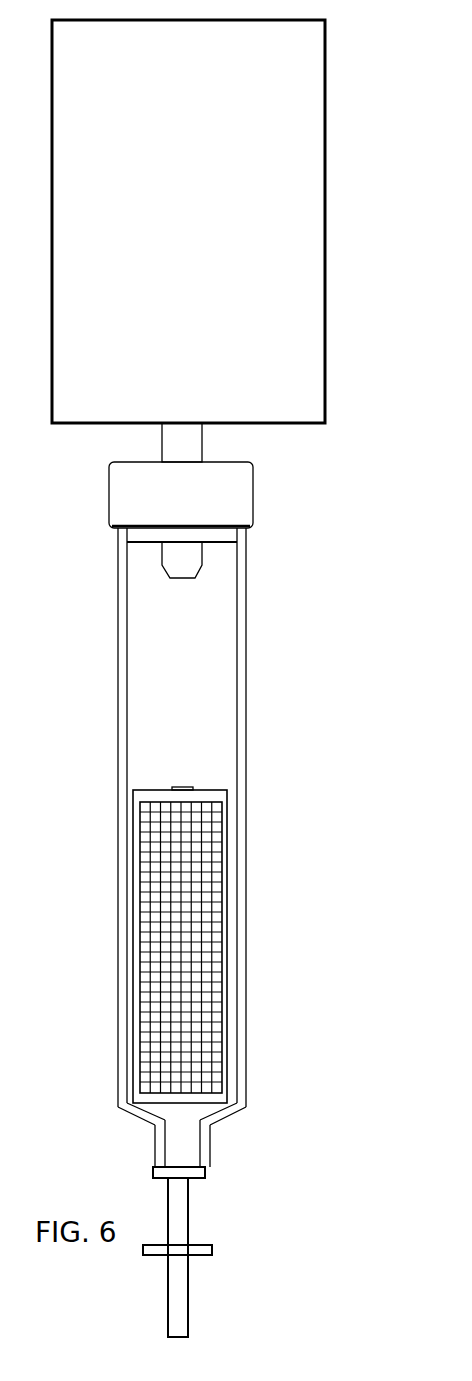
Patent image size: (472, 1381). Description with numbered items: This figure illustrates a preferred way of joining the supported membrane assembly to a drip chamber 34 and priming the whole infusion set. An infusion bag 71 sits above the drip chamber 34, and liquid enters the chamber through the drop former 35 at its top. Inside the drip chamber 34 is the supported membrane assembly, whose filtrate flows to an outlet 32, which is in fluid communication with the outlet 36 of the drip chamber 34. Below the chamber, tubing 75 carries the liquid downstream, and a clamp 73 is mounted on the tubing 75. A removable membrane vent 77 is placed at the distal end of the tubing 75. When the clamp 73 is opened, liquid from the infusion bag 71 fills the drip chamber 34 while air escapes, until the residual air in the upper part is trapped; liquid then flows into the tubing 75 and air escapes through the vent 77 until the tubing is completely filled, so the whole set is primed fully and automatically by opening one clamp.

The infusion bag 71 is at (293, 221).
The drop former 35 is at (203, 565).
The drip chamber 34 is at (200, 826).
The outlet 32 is at (225, 1098).
The outlet 36 is at (206, 1150).
The removable membrane vent 77 is at (197, 1173).
The clamp 73 is at (207, 1250).
The tubing 75 is at (181, 1285).